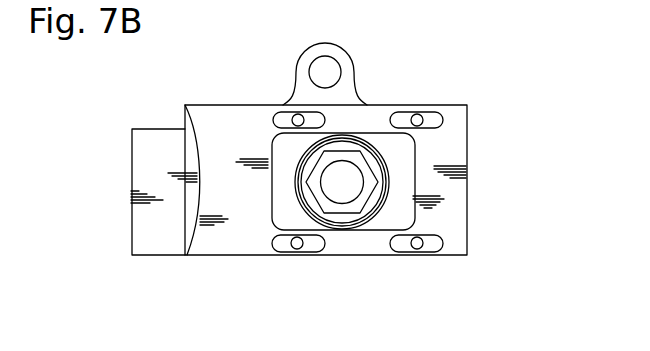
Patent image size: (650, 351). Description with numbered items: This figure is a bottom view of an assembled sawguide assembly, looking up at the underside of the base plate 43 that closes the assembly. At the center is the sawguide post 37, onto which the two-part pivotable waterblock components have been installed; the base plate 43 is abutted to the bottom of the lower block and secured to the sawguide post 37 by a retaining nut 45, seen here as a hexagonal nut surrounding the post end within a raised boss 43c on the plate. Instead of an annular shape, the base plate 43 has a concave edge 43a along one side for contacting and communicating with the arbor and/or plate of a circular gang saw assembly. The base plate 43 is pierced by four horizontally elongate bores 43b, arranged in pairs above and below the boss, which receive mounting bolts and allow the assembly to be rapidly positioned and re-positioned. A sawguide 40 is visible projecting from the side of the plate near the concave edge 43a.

The sawguide 40 is at (157, 129).
The base plate 43 is at (255, 105).
The concave edge 43a is at (196, 158).
The horizontally elongate bores 43b is at (316, 112).
The rounded boss 43c is at (273, 212).
The sawguide post 37 is at (359, 173).
The retaining nut 45 is at (370, 198).